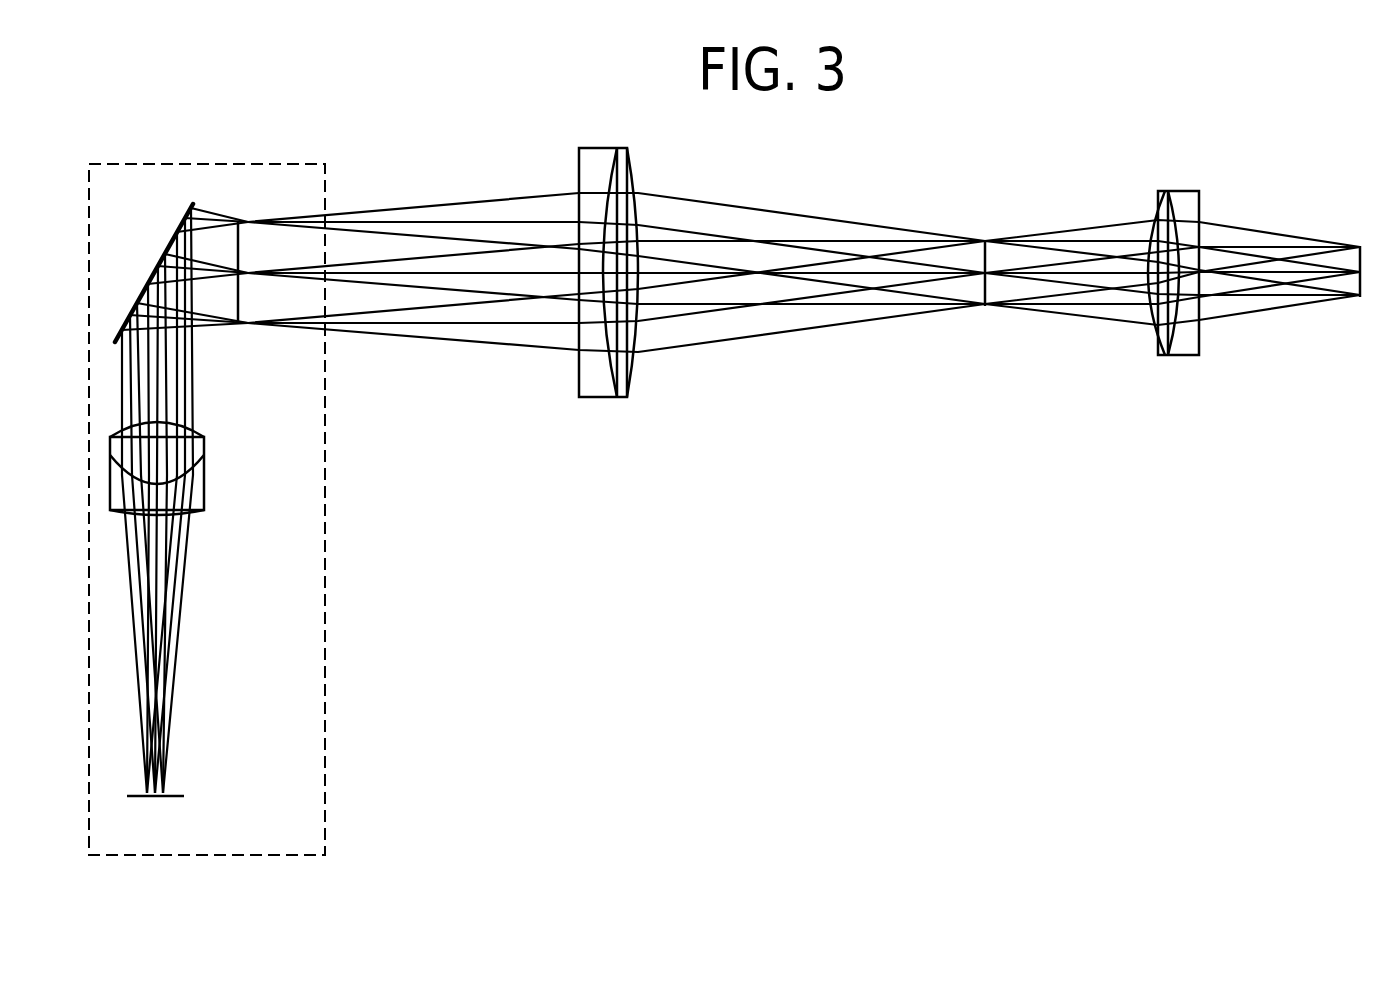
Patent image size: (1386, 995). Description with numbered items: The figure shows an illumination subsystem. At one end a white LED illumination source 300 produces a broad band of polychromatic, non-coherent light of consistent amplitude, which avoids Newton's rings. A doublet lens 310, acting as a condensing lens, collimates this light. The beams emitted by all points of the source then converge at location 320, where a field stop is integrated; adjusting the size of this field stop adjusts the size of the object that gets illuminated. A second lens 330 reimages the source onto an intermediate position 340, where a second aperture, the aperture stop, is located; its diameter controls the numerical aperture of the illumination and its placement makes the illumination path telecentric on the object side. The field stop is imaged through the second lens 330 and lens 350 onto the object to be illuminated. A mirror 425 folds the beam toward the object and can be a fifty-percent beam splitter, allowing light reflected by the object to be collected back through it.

The white LED illumination source 300 is at (1360, 296).
The doublet lens 310 is at (1175, 352).
The field stop location 320 is at (983, 306).
The second lens 330 is at (628, 398).
The intermediate position 340 is at (243, 246).
The lens 350 is at (325, 610).
The mirror 425 is at (152, 272).